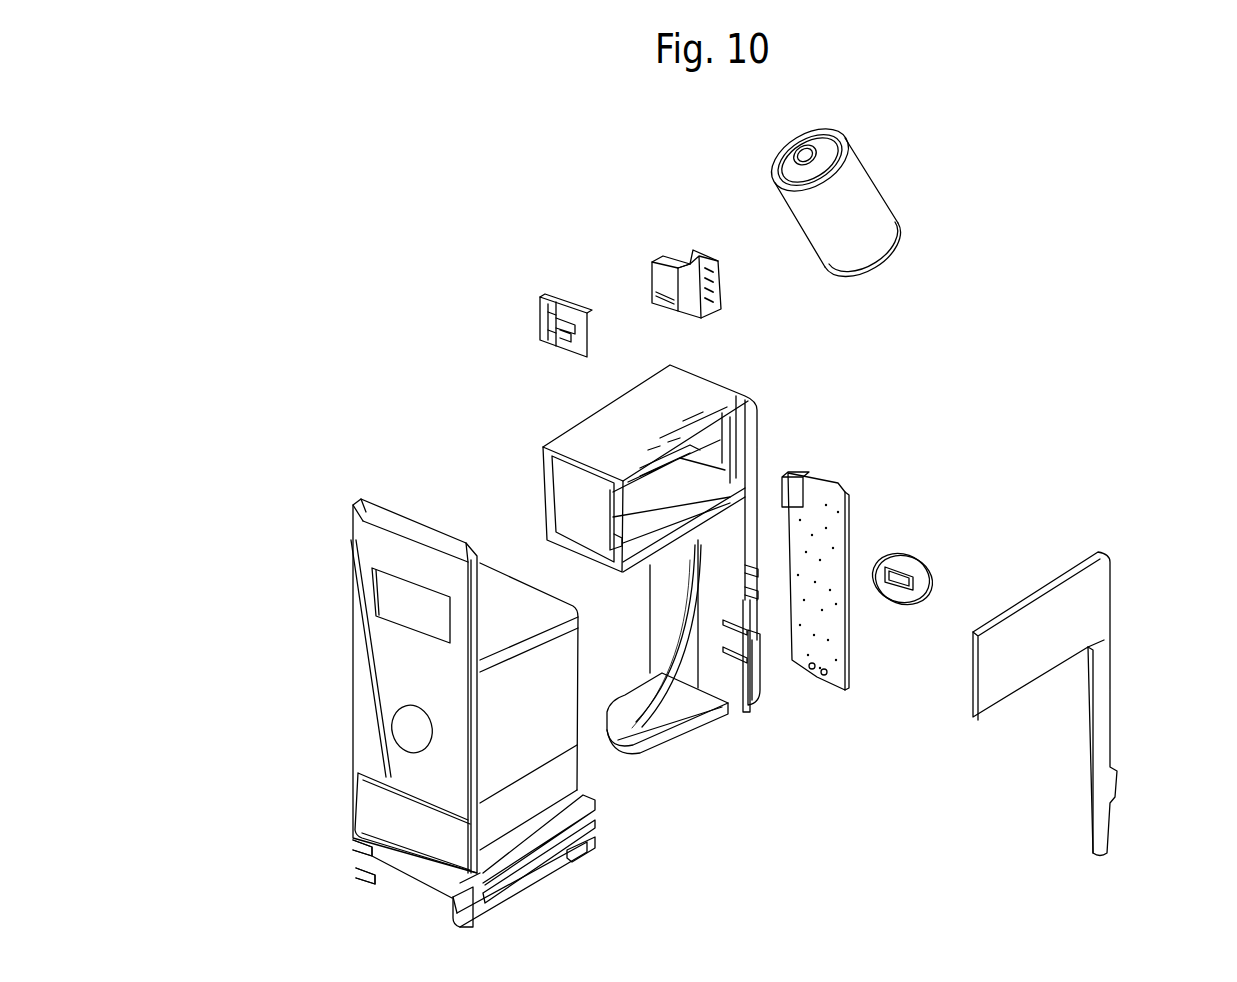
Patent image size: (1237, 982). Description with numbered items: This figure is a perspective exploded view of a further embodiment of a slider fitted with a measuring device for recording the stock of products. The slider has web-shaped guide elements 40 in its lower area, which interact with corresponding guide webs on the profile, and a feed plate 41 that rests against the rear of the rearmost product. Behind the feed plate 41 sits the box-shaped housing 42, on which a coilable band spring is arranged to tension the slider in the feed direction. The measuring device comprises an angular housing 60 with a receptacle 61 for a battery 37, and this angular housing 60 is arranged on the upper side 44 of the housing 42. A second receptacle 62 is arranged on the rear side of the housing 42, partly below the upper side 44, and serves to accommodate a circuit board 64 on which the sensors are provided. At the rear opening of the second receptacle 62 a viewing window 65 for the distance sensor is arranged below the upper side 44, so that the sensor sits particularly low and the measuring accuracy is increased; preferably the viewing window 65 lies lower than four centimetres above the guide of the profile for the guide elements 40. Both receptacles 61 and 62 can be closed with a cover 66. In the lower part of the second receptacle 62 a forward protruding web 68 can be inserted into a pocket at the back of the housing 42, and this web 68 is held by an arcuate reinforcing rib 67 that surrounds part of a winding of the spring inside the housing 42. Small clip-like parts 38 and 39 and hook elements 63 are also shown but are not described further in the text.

The battery 37 is at (842, 190).
The clip 38 is at (675, 278).
The clip 39 is at (578, 333).
The guide elements 40 is at (360, 864).
The feed plate 41 is at (388, 661).
The housing 42 is at (431, 716).
The upper side 44 is at (508, 605).
The angular housing 60 is at (639, 460).
The receptacle 61 is at (647, 457).
The second receptacle 62 is at (750, 562).
The hooks 63 is at (753, 620).
The circuit board 64 is at (842, 532).
The viewing window 65 is at (908, 570).
The cover 66 is at (1088, 603).
The arcuate reinforcing rib 67 is at (688, 687).
The web 68 is at (689, 737).